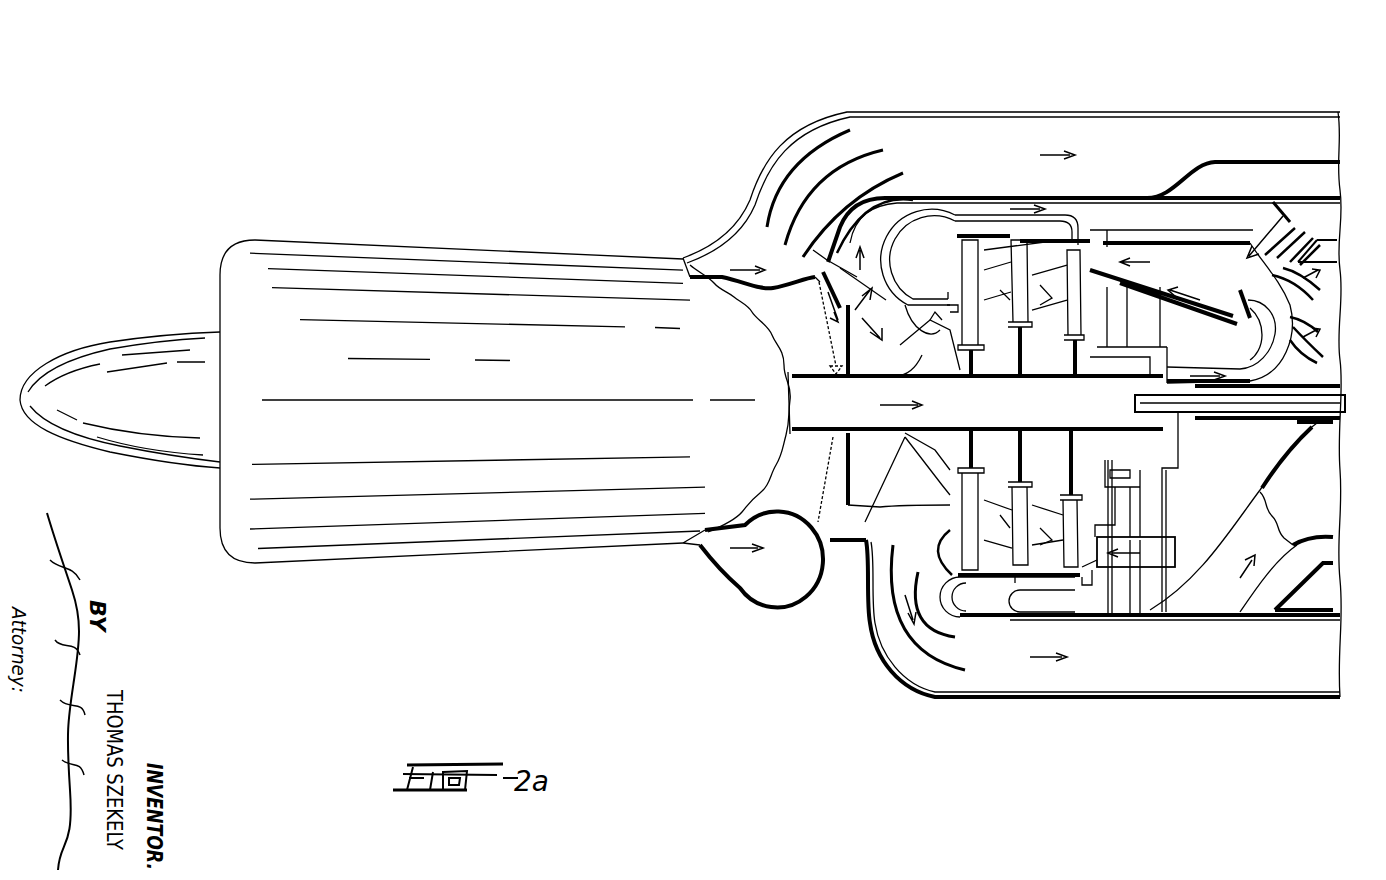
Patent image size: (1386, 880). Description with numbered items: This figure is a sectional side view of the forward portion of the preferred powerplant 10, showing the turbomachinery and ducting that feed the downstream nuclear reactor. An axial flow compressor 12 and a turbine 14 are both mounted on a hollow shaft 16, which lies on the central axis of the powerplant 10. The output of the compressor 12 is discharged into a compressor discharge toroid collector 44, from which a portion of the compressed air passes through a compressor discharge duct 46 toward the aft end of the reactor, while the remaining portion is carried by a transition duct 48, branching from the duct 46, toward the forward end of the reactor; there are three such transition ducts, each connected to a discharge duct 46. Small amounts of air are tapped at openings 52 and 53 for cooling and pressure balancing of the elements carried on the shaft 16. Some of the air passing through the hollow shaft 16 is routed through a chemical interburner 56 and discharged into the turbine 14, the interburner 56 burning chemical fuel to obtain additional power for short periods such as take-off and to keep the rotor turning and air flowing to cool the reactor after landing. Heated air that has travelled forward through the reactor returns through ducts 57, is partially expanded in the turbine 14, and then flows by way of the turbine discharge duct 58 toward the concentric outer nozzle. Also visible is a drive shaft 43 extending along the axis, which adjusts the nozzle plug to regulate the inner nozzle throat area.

The powerplant 10 is at (895, 65).
The axial flow compressor 12 is at (380, 243).
The turbine 14 is at (1020, 573).
The hollow shaft 16 is at (877, 432).
The drive shaft 43 is at (1277, 432).
The compressor discharge toroid collector 44 is at (742, 586).
The compressor discharge duct 46 is at (1050, 111).
The transition duct 48 is at (1257, 597).
The opening 52 is at (817, 277).
The opening 53 is at (813, 250).
The chemical interburner 56 is at (1225, 290).
The duct 57 is at (1323, 310).
The turbine discharge duct 58 is at (1190, 700).